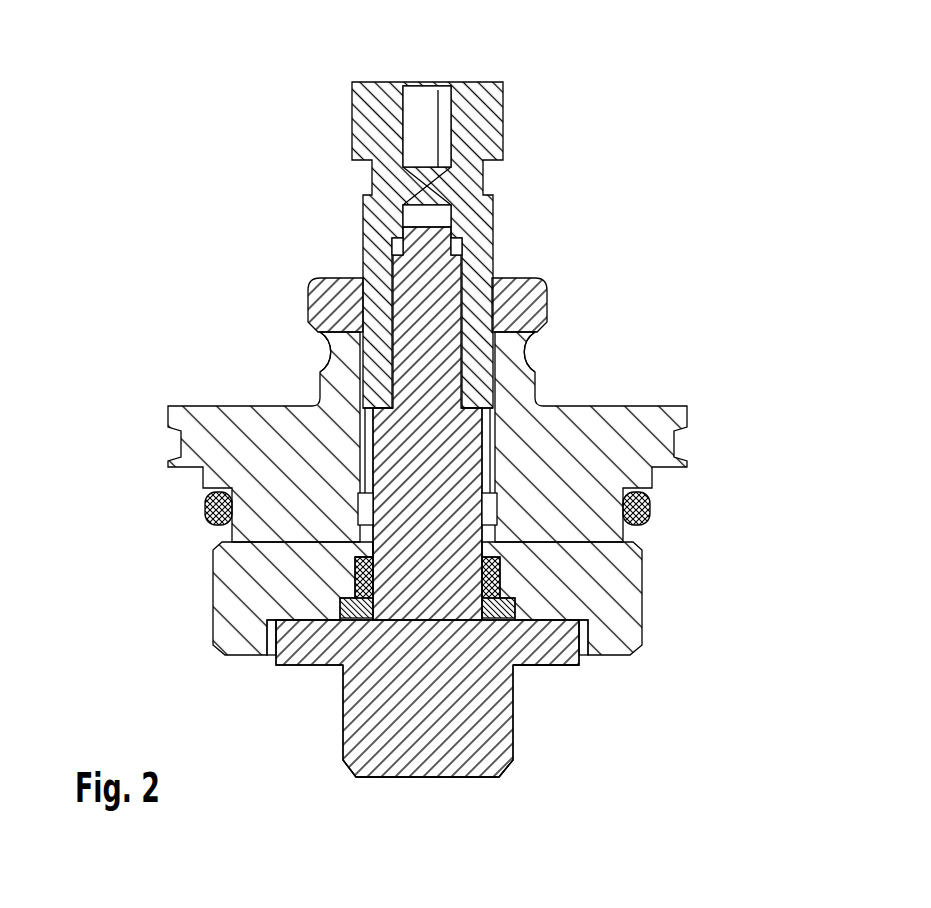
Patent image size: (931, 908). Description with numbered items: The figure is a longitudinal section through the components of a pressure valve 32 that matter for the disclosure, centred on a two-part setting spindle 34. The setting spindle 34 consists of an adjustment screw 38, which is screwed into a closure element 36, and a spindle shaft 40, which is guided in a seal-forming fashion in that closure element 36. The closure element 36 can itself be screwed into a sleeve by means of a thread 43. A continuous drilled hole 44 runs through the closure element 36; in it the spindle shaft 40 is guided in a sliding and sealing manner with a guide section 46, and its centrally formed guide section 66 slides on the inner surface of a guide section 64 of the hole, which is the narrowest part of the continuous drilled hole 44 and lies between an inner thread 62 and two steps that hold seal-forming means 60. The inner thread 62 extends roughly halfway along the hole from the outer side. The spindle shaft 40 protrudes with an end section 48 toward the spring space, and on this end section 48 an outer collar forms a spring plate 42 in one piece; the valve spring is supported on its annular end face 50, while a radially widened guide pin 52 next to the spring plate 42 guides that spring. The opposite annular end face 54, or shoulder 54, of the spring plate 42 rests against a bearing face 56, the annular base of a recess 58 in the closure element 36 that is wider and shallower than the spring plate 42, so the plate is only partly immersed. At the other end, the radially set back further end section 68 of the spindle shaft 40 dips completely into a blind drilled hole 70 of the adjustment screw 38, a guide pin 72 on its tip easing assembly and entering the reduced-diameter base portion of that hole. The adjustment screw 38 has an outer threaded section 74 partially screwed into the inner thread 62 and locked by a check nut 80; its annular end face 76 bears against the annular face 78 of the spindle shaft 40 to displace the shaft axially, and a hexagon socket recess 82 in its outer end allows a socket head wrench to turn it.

The pressure valve 32 is at (572, 190).
The setting spindle 34 is at (348, 338).
The closure element 36 is at (640, 438).
The adjustment screw 38 is at (482, 225).
The spindle shaft 40 is at (473, 517).
The spring plate 42 is at (551, 656).
The thread 43 is at (213, 595).
The continuous drilled hole 44 is at (374, 550).
The guide section 46 is at (455, 458).
The end section 48 is at (426, 691).
The annular end face 50 is at (318, 668).
The guide pin 52 is at (420, 758).
The annular end face 54 is at (336, 604).
The bearing face 56 is at (556, 626).
The recess 58 is at (268, 650).
The seal-forming means 60 is at (356, 578).
The inner thread 62 is at (368, 367).
The guide section 64 is at (492, 544).
The guide section 66 is at (390, 438).
The further end section 68 is at (396, 272).
The blind drilled hole 70 is at (437, 272).
The guide pin 72 is at (400, 232).
The outer threaded section 74 is at (474, 307).
The annular end face 76 is at (462, 416).
The annular face 78 is at (398, 430).
The check nut 80 is at (315, 282).
The hexagon socket recess 82 is at (405, 100).